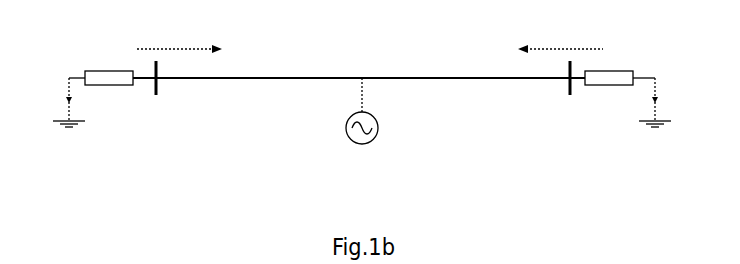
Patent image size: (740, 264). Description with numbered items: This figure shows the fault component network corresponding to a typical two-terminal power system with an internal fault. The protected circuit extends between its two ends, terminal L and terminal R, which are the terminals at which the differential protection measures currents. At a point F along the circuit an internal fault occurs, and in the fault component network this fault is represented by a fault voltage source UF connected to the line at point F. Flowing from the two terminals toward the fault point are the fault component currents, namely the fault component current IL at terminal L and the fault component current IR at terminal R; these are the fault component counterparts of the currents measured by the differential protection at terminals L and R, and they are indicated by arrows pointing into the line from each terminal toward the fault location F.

The terminal L is at (154, 91).
The terminal R is at (571, 91).
The internal fault location F is at (351, 86).
The fault voltage source UF is at (375, 128).
The fault component current at terminal L IL is at (179, 43).
The fault component current at terminal R IR is at (560, 43).